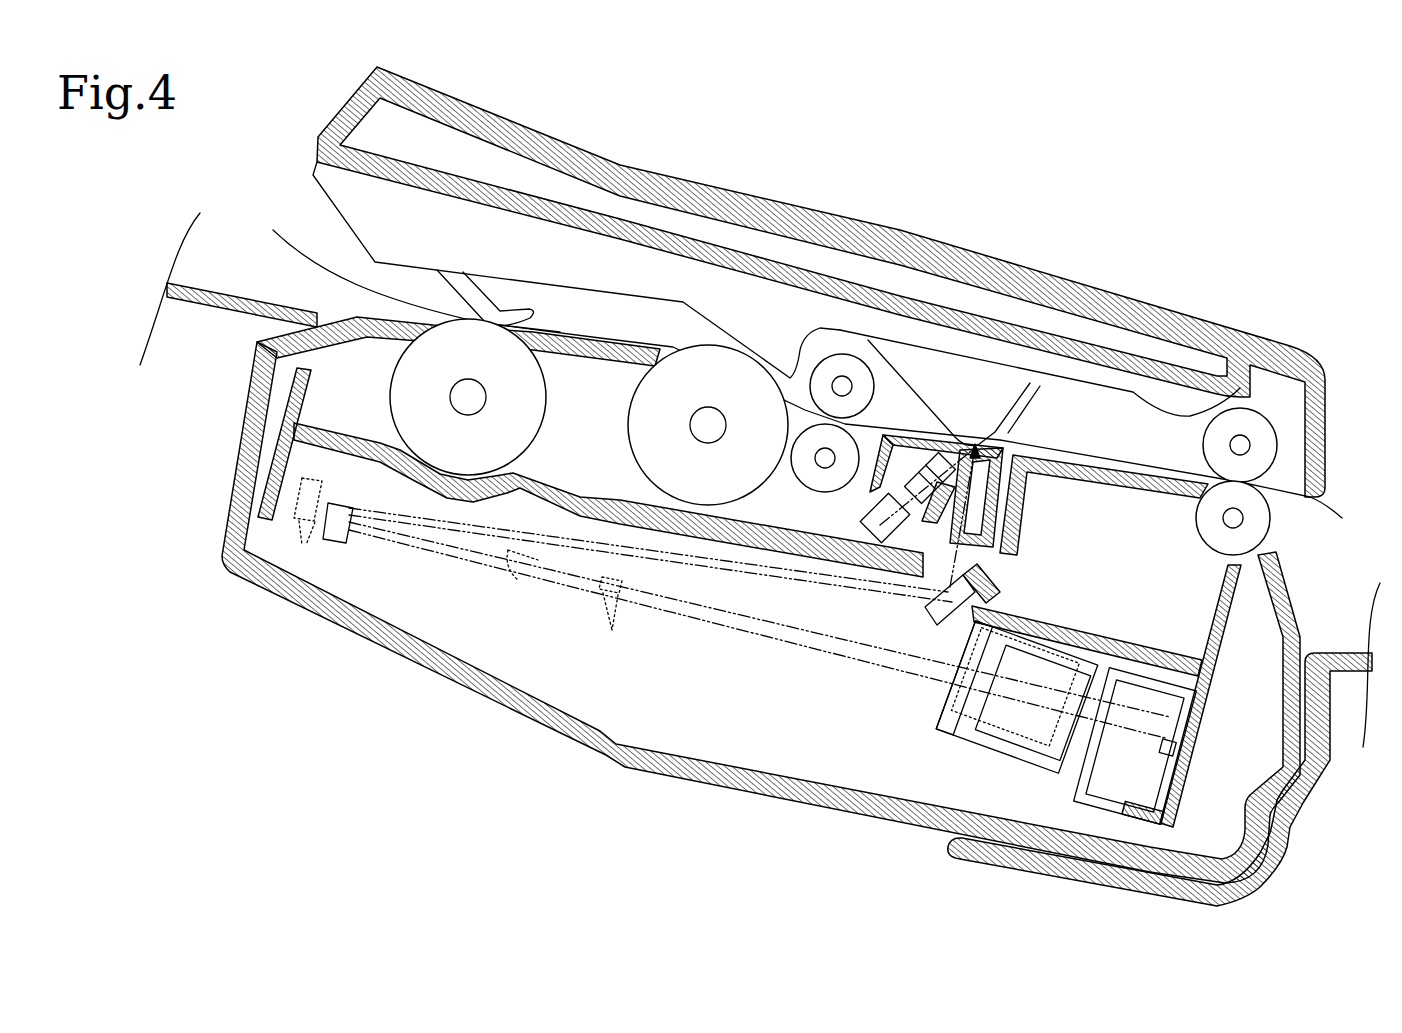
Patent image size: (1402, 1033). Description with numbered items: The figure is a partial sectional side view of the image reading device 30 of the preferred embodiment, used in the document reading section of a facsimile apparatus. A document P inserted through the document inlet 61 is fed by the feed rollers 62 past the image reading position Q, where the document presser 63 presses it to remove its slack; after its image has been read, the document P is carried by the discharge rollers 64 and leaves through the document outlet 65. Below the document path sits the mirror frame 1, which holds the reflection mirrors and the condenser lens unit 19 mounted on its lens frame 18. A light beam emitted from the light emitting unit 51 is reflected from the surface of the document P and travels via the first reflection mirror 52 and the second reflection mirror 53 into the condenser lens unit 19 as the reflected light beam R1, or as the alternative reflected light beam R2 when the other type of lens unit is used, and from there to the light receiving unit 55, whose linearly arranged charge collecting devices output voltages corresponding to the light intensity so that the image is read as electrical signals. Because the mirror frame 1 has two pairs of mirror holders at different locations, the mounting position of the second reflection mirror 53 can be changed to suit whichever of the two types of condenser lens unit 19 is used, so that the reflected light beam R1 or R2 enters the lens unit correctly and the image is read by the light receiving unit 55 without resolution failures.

The mirror frame 1 is at (1012, 612).
The lens frame 18 is at (952, 713).
The condenser lens unit 19 is at (958, 735).
The image reading device 30 is at (917, 211).
The light emitting unit 51 is at (867, 517).
The first reflection mirror 52 is at (942, 608).
The second reflection mirror 53 is at (302, 523).
The light receiving unit 55 is at (1147, 760).
The document inlet 61 is at (392, 306).
The feed rollers 62 is at (628, 424).
The document presser 63 is at (1020, 408).
The discharge rollers 64 is at (1268, 410).
The document outlet 65 is at (1276, 496).
The document P is at (293, 243).
The image reading position Q is at (1000, 515).
The reflected light beam R1 is at (503, 588).
The reflected light beam R2 is at (600, 623).